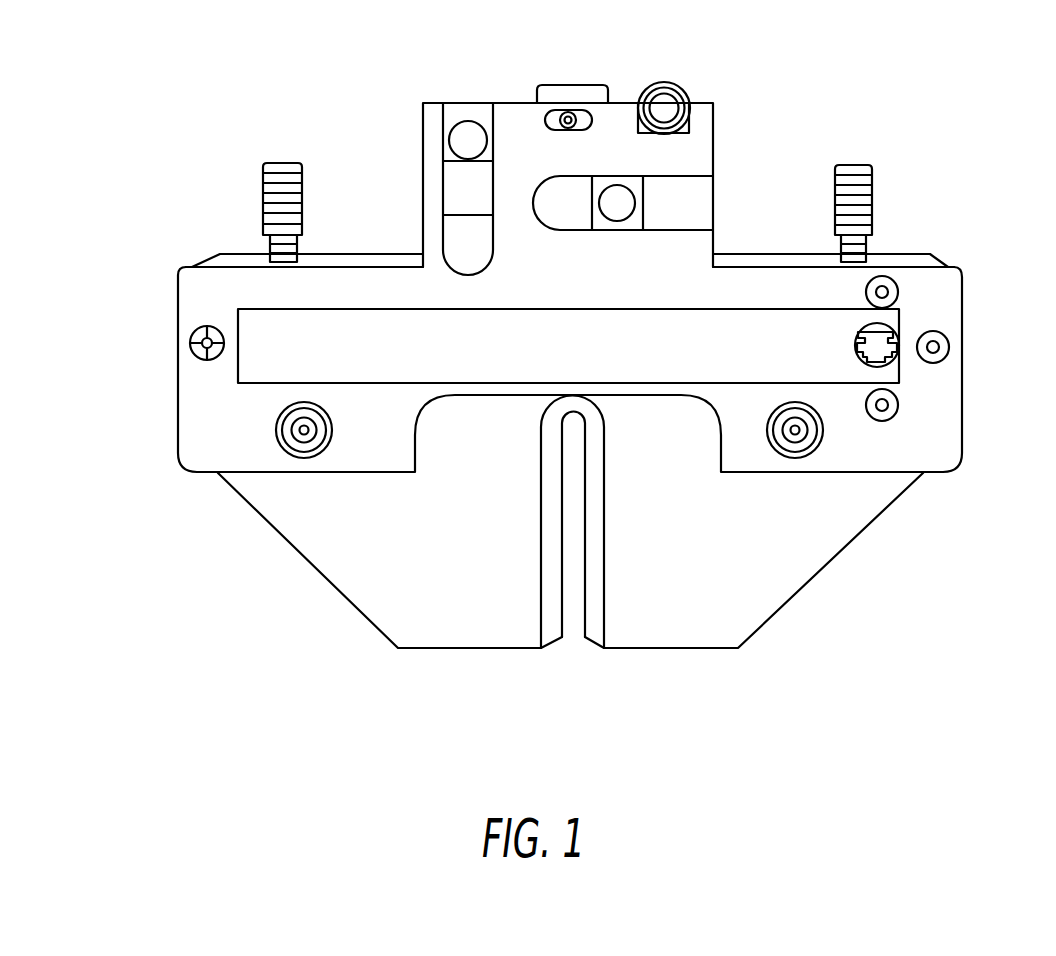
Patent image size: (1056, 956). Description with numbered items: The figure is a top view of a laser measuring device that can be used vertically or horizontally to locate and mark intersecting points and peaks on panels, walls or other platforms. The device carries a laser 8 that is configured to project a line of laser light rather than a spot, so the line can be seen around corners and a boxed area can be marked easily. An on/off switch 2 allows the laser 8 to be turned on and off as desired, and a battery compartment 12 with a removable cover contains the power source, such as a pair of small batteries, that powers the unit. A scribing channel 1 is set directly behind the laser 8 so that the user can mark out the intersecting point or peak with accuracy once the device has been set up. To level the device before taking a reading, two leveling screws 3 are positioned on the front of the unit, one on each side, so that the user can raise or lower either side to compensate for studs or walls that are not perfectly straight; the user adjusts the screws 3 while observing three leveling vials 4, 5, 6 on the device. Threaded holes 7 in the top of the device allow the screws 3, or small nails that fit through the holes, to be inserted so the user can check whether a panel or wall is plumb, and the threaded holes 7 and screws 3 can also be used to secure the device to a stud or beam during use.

The scribing channel 1 is at (573, 640).
The on/off switch 2 is at (880, 343).
The leveling screws 3 is at (283, 162).
The leveling vial 4 is at (468, 142).
The leveling vial 5 is at (692, 203).
The leveling vial 6 is at (665, 107).
The threaded holes 7 is at (304, 430).
The laser 8 is at (568, 85).
The battery compartment 12 is at (268, 345).